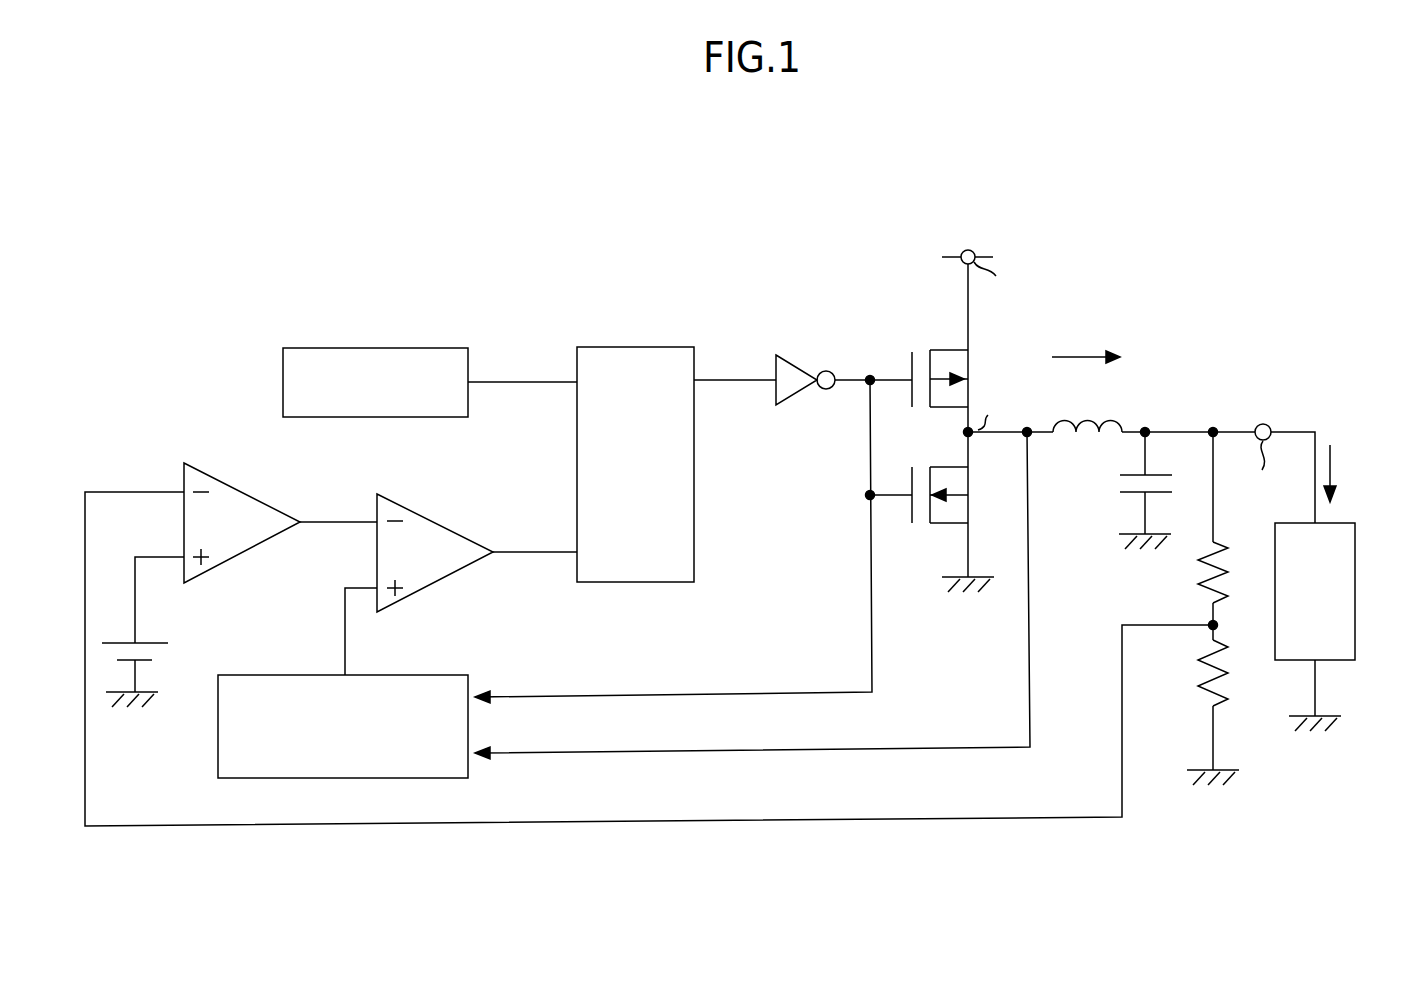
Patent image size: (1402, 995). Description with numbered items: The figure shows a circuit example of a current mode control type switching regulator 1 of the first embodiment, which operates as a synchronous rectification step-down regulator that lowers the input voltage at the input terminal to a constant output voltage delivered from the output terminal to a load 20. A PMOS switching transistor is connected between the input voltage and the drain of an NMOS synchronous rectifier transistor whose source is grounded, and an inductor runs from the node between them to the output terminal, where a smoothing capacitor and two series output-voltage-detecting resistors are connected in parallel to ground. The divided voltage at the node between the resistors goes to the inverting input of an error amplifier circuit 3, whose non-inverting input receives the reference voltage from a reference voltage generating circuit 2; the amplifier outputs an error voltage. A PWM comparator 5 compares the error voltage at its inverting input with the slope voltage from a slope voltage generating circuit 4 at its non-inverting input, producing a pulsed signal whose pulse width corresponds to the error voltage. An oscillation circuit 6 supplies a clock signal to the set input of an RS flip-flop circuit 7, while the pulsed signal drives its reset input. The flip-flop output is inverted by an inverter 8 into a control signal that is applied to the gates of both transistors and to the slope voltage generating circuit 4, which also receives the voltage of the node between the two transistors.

The current mode control type switching regulator 1 is at (535, 298).
The reference voltage generating circuit 2 is at (150, 652).
The error amplifier circuit 3 is at (240, 486).
The slope voltage generating circuit 4 is at (432, 674).
The PWM comparator 5 is at (436, 514).
The oscillation circuit 6 is at (380, 346).
The RS flip-flop circuit 7 is at (640, 345).
The inverter 8 is at (800, 356).
The load 20 is at (1355, 622).